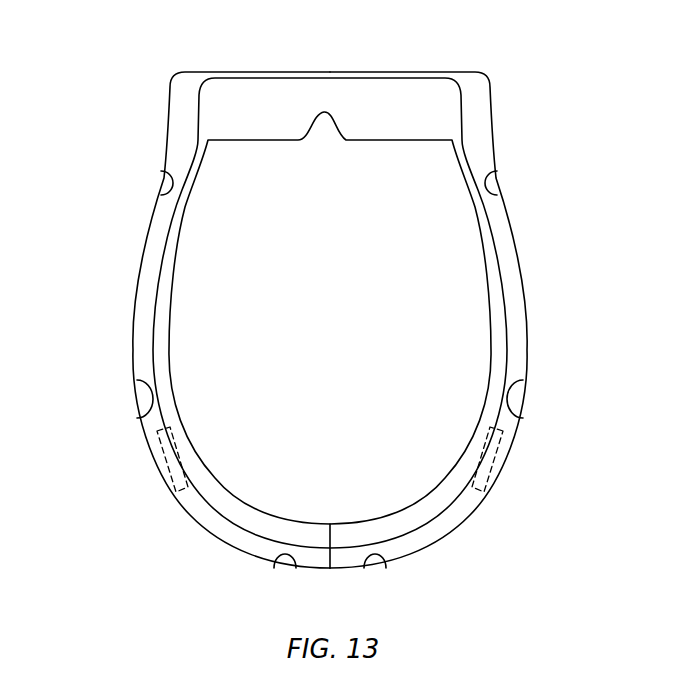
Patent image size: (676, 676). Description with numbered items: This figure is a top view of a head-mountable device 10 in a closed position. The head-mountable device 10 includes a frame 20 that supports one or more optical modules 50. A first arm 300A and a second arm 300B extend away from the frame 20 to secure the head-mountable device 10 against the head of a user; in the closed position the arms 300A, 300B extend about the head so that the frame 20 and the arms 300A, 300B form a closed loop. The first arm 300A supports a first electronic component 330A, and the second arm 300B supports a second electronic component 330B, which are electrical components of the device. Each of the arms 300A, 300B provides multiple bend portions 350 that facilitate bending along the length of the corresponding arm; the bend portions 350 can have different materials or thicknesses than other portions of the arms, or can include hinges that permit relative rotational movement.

The head-mountable device 10 is at (86, 62).
The frame 20 is at (465, 88).
The optical module 50 is at (259, 106).
The first arm 300A is at (133, 351).
The second arm 300B is at (528, 352).
The first electronic component 330A is at (166, 478).
The second electronic component 330B is at (497, 477).
The bend portion 350 is at (163, 183).